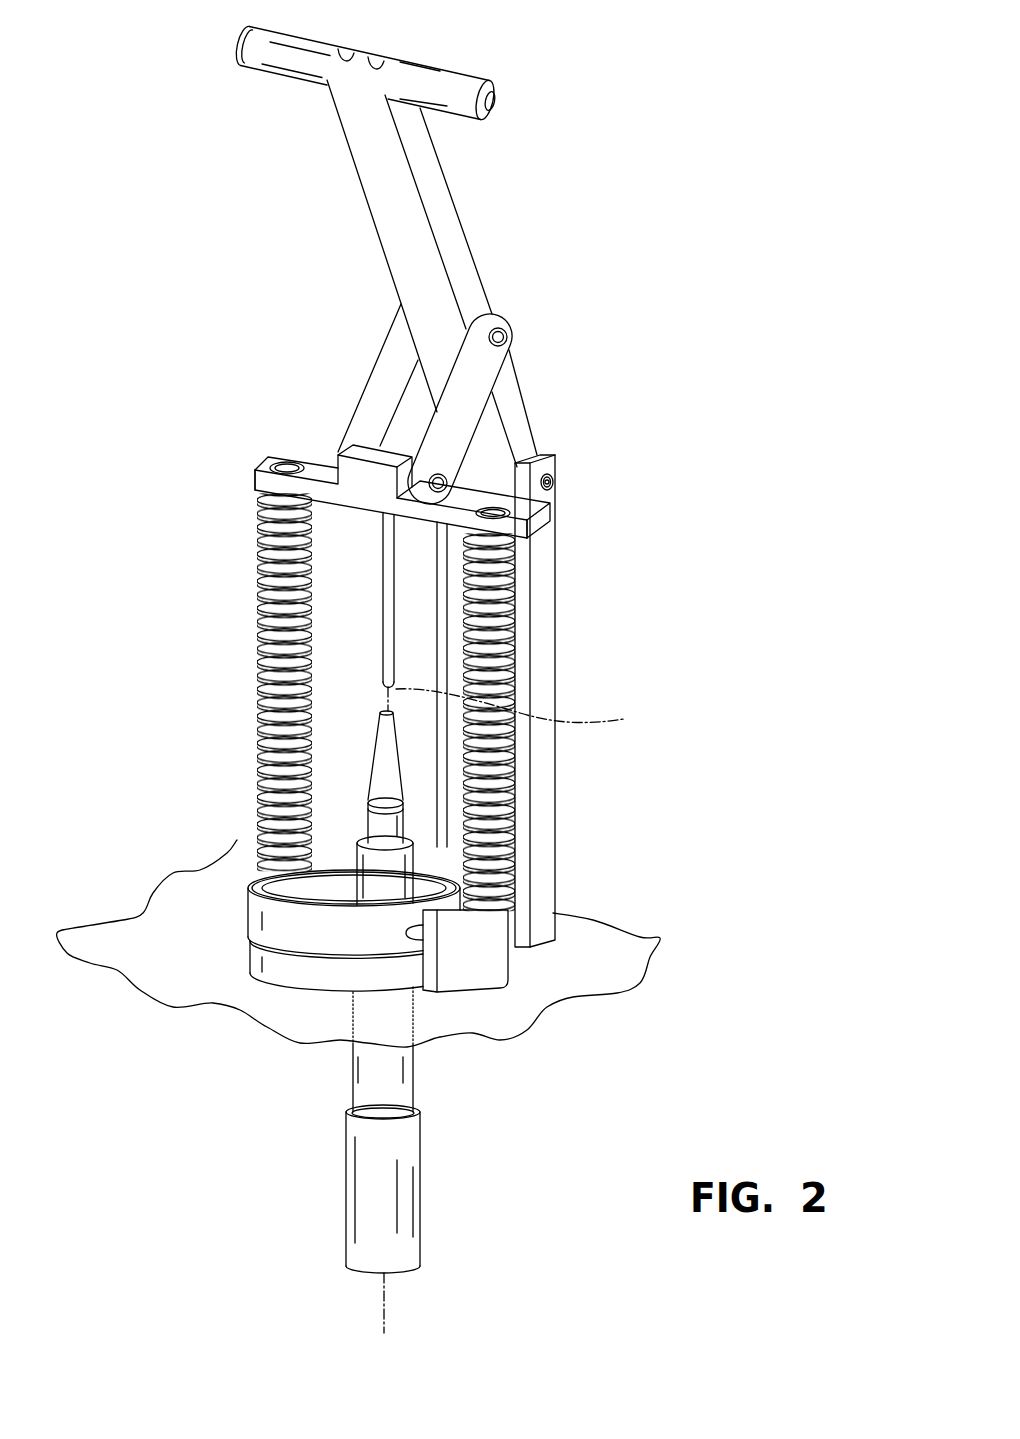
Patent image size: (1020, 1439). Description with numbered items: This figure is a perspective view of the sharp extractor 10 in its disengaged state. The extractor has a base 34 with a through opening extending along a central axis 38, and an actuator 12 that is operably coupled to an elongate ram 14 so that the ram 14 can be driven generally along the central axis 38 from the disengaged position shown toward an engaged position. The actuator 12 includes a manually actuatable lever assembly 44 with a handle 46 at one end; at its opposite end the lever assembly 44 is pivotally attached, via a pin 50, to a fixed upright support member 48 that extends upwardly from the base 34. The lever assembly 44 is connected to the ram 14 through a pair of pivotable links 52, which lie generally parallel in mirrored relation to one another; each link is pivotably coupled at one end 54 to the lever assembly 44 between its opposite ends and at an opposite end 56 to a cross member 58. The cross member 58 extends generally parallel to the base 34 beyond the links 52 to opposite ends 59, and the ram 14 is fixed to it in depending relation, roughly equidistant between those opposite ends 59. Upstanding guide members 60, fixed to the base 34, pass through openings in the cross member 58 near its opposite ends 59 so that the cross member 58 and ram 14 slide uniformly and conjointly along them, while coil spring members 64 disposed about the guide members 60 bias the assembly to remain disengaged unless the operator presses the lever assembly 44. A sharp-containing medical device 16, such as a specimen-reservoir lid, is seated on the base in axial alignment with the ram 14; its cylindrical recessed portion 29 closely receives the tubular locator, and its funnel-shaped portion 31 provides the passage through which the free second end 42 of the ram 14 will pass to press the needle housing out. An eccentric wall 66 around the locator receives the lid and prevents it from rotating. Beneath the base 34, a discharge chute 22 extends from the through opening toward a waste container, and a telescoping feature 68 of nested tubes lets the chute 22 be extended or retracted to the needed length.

The sharp extractor 10 is at (665, 180).
The actuator 12 is at (445, 52).
The ram 14 is at (382, 618).
The medical device 16 is at (240, 910).
The discharge chute 22 is at (413, 1079).
The cylindrical recessed portion 29 is at (356, 862).
The funnel-shaped portion 31 is at (362, 810).
The base 34 is at (243, 967).
The central axis 38 is at (285, 1283).
The free second end 42 is at (383, 688).
The lever assembly 44 is at (460, 214).
The handle 46 is at (502, 80).
The upright support member 48 is at (556, 628).
The pin 50 is at (555, 485).
The links 52 is at (368, 367).
The one end 54 is at (500, 326).
The opposite end 56 is at (455, 493).
The cross member 58 is at (314, 472).
The opposite ends 59 is at (253, 480).
The guide members 60 is at (286, 463).
The spring members 64 is at (258, 757).
The eccentric wall 66 is at (410, 928).
The telescoping feature 68 is at (420, 1111).